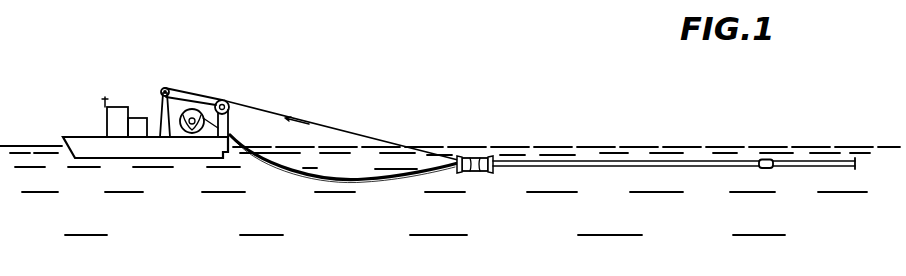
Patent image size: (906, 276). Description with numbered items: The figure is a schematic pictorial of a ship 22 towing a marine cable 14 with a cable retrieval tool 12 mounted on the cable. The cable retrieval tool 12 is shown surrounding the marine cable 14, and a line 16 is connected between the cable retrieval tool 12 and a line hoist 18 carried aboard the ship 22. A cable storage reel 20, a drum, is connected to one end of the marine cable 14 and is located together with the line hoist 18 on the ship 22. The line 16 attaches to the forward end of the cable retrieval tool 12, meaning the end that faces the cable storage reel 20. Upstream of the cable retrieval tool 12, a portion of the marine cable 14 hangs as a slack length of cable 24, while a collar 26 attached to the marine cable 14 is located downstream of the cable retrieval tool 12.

The cable retrieval tool 12 is at (473, 156).
The marine cable 14 is at (557, 160).
The line 16 is at (376, 142).
The line hoist 18 is at (226, 100).
The cable storage reel 20 is at (192, 108).
The ship 22 is at (118, 106).
The slack length of cable 24 is at (390, 186).
The collar 26 is at (765, 169).